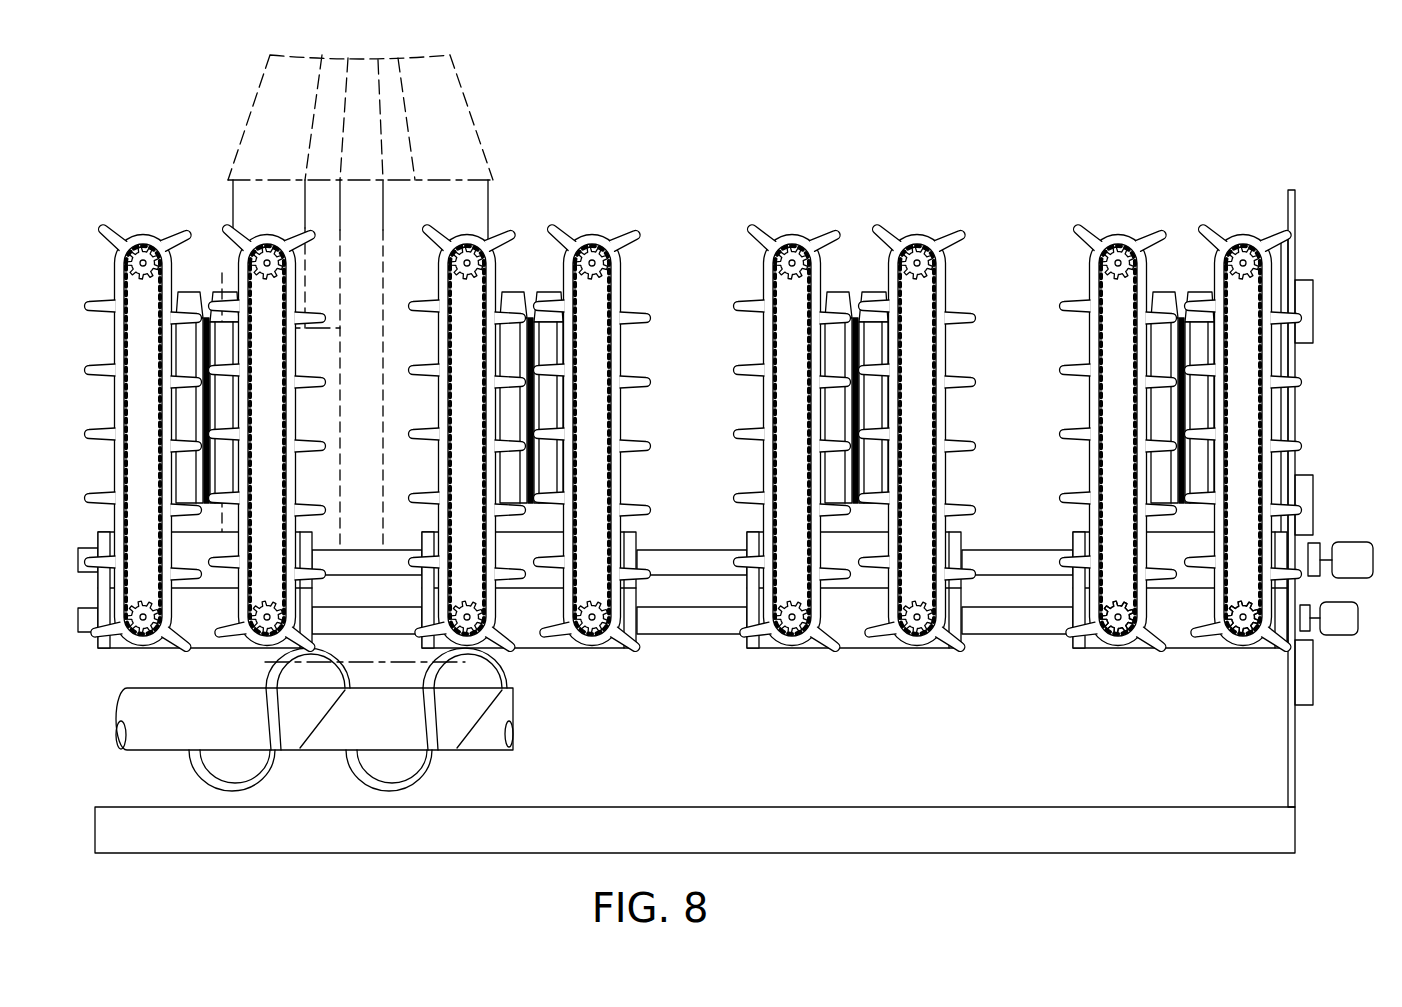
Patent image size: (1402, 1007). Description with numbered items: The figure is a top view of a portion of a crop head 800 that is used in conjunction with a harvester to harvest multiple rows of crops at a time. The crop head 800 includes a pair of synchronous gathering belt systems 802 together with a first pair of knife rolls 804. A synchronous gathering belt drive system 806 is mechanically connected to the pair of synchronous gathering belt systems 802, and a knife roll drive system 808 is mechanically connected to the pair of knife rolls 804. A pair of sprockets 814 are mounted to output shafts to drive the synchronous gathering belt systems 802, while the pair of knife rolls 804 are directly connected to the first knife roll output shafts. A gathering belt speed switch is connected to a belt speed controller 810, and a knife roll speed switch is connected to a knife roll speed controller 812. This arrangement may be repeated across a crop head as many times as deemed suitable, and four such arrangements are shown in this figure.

The crop head 800 is at (735, 454).
The synchronous gathering belt systems 802 is at (1266, 192).
The knife rolls 804 is at (1162, 283).
The synchronous gathering belt drive system 806 is at (1093, 660).
The knife roll drive system 808 is at (1069, 527).
The belt speed controller 810 is at (1313, 674).
The knife roll speed controller 812 is at (1313, 506).
The sprockets 814 is at (1246, 632).